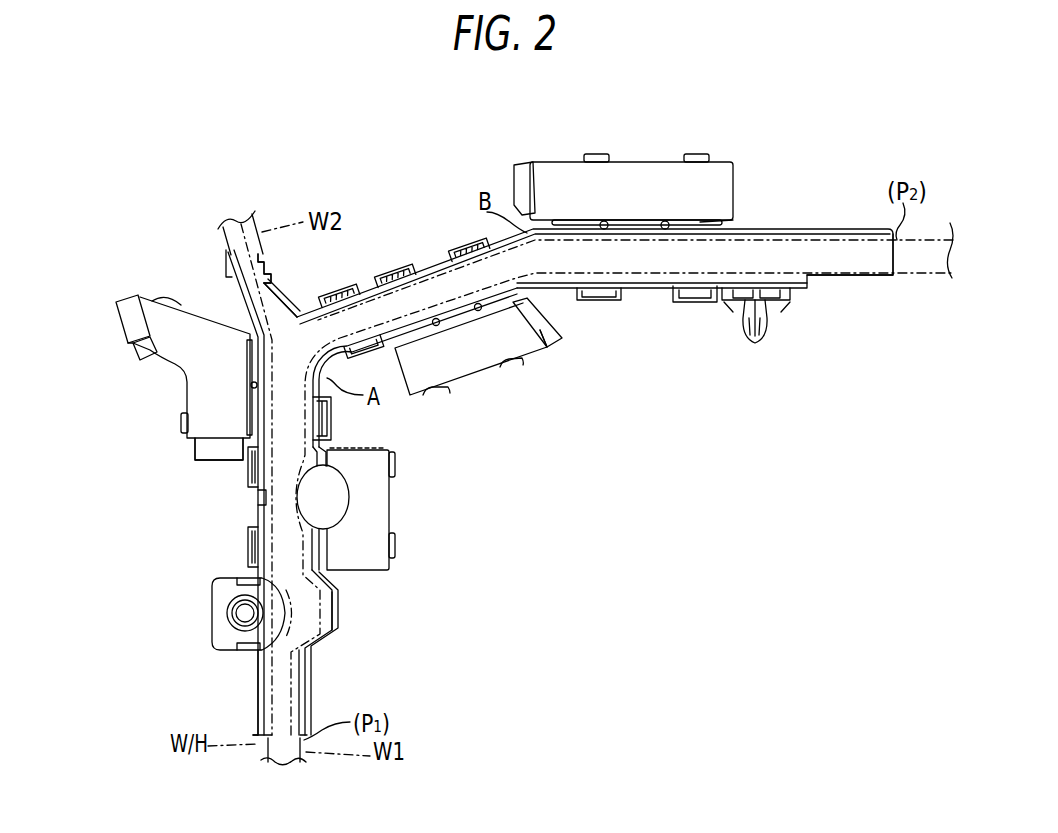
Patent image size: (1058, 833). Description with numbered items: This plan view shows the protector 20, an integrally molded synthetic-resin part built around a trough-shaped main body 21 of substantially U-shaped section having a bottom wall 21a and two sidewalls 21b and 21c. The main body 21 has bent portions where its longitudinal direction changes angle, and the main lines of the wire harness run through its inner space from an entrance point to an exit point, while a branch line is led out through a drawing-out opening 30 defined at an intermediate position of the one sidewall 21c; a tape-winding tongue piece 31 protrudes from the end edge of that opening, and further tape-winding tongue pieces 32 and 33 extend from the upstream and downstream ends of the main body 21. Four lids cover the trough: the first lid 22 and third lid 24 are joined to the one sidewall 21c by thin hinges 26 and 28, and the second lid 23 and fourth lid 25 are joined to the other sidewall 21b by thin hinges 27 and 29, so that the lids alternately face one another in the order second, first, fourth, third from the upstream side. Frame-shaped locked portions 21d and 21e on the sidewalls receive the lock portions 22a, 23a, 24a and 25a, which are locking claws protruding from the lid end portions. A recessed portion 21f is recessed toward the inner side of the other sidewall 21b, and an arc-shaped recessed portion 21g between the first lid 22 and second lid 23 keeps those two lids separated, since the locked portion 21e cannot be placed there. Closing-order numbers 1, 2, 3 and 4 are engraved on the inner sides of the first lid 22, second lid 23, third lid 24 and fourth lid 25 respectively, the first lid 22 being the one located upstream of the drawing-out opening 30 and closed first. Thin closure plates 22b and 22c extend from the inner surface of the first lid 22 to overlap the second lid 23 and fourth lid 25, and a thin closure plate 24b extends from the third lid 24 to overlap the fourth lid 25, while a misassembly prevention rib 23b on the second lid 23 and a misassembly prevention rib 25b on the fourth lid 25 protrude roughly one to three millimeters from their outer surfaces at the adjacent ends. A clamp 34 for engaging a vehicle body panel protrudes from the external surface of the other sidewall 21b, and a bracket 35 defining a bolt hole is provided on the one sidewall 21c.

The closing-order number 1 is at (156, 365).
The closing-order number 2 is at (401, 505).
The closing-order number 3 is at (607, 169).
The closing-order number 4 is at (514, 367).
The protector 20 is at (134, 223).
The main body 21 is at (332, 640).
The bottom wall 21a is at (240, 576).
The sidewall 21b is at (337, 612).
The sidewall 21c is at (252, 523).
The locked portion 21d is at (332, 420).
The locked portion 21e is at (248, 475).
The recessed portion 21f is at (263, 497).
The recessed portion 21g is at (237, 609).
The first lid 22 is at (184, 378).
The lock portion 22a is at (183, 423).
The closure plate 22b is at (197, 456).
The closure plate 22c is at (124, 312).
The second lid 23 is at (392, 491).
The lock portion 23a is at (397, 545).
The misassembly prevention rib 23b is at (390, 449).
The third lid 24 is at (633, 160).
The lock portion 24a is at (723, 138).
The closure plate 24b is at (516, 176).
The fourth lid 25 is at (478, 378).
The lock portion 25a is at (517, 366).
The misassembly prevention rib 25b is at (561, 332).
The thin hinge 26 is at (250, 370).
The thin hinge 27 is at (330, 573).
The thin hinge 28 is at (717, 228).
The thin hinge 29 is at (541, 345).
The drawing-out opening 30 is at (297, 310).
The tape-winding tongue piece 31 is at (232, 255).
The tape-winding tongue piece 32 is at (257, 698).
The tape-winding tongue piece 33 is at (863, 262).
The clamp 34 is at (767, 328).
The bracket 35 is at (222, 645).